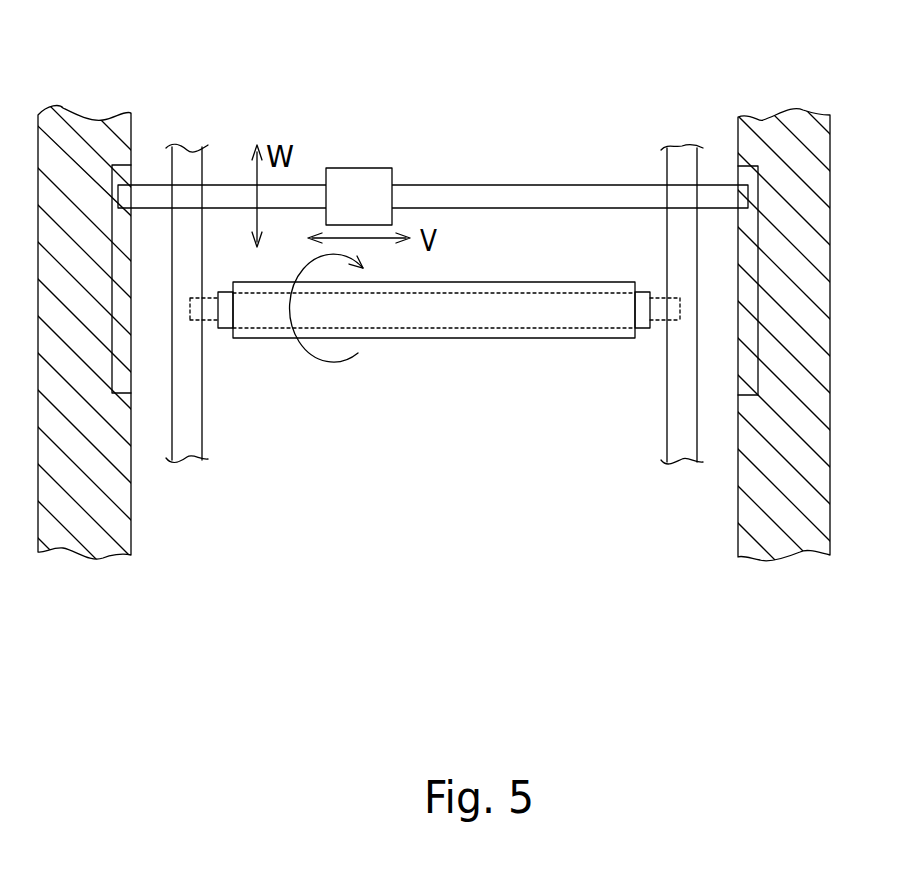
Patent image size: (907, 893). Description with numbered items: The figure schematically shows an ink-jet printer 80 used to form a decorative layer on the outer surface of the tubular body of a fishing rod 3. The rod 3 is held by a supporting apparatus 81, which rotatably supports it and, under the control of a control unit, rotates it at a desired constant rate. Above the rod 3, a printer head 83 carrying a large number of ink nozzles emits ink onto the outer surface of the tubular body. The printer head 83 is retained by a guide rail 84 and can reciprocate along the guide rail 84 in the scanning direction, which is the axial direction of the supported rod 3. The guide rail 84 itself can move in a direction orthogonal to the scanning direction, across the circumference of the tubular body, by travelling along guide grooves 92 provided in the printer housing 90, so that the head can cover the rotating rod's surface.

The ink-jet printer 80 is at (557, 117).
The supporting apparatus 81 is at (655, 320).
The printer head 83 is at (358, 178).
The guide rail 84 is at (480, 190).
The printer housing 90 is at (775, 525).
The guide grooves 92 is at (750, 313).
The rod 3 is at (440, 313).